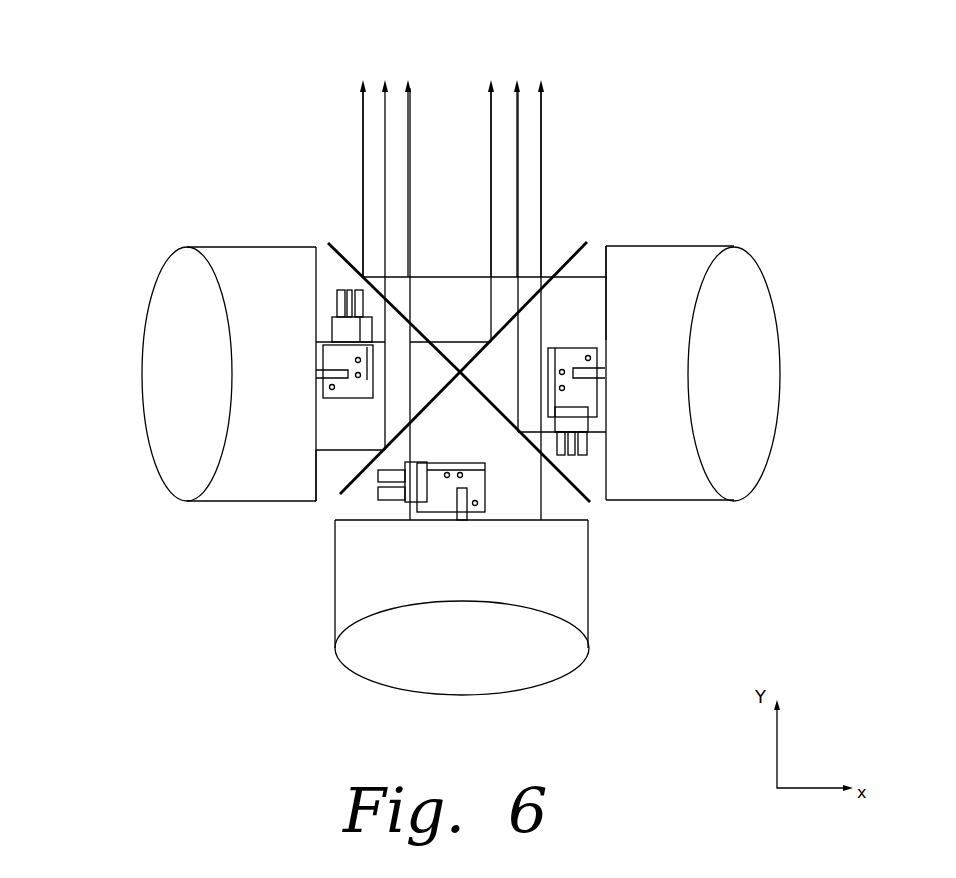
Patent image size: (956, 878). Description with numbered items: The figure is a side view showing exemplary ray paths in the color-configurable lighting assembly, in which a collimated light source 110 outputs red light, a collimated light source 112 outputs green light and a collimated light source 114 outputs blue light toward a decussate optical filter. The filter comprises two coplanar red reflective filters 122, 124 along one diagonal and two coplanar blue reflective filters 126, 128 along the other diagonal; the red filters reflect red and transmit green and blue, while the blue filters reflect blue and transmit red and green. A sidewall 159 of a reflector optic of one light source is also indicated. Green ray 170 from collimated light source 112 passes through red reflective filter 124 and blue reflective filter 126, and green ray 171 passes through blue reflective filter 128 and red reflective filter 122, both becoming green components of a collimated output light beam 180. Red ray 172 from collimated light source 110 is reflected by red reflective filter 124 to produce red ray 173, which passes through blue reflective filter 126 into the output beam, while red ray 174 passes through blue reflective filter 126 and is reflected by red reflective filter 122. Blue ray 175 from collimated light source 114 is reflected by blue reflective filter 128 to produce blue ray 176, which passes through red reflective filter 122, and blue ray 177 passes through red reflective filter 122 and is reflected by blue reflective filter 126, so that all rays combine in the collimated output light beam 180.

The collimated light source 110 is at (188, 303).
The collimated light source 112 is at (553, 590).
The collimated light source 114 is at (667, 275).
The first reflective filter 122 is at (589, 262).
The first reflective filter 124 is at (342, 494).
The reflective filter 126 is at (336, 250).
The reflective filter 128 is at (590, 500).
The sidewall 159 is at (387, 206).
The ray 170 is at (405, 515).
The ray 171 is at (545, 521).
The ray 172 is at (317, 450).
The red ray 173 is at (385, 412).
The ray 174 is at (335, 338).
The ray 175 is at (600, 440).
The blue ray 176 is at (518, 340).
The ray 177 is at (593, 272).
The collimated output light beam 180 is at (547, 80).